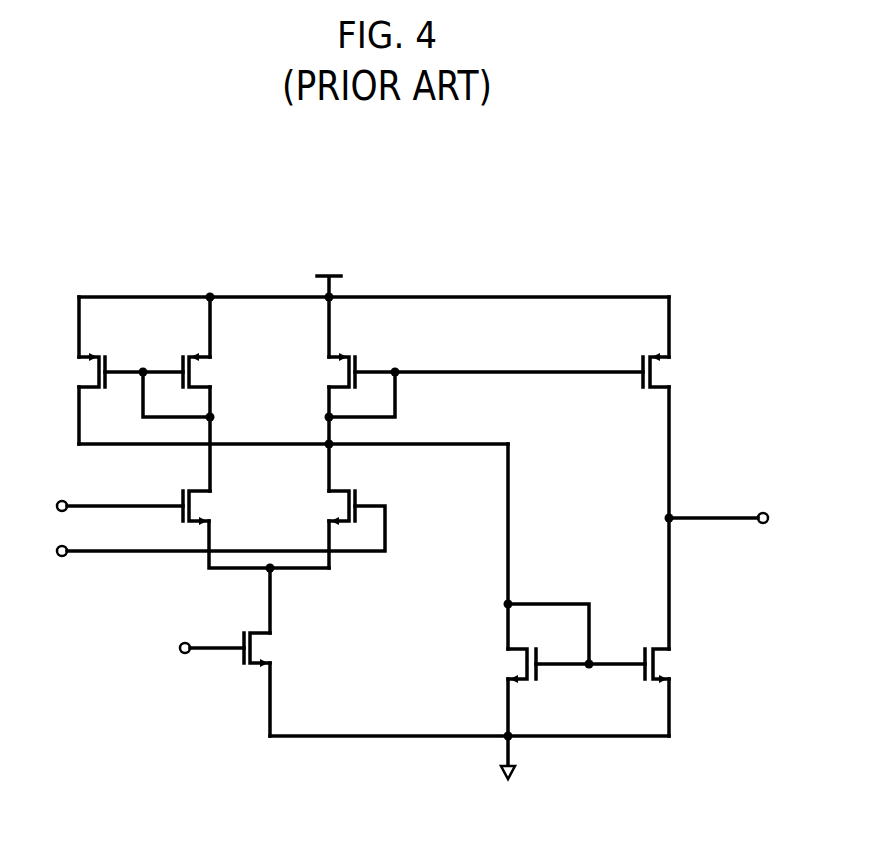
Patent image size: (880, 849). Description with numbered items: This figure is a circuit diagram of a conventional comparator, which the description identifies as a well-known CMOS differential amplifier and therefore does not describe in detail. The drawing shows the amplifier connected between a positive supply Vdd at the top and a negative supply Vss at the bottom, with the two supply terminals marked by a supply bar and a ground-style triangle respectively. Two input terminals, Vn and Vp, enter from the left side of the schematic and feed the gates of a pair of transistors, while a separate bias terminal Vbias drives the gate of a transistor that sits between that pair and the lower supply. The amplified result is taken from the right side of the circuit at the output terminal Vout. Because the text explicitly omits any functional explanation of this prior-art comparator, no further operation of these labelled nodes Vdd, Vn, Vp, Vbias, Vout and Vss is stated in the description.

The positive supply voltage terminal Vdd is at (330, 272).
The inverting input terminal Vn is at (96, 504).
The non-inverting input terminal Vp is at (197, 533).
The bias voltage input terminal Vbias is at (178, 647).
The output terminal Vout is at (747, 517).
The negative supply / ground terminal Vss is at (509, 772).